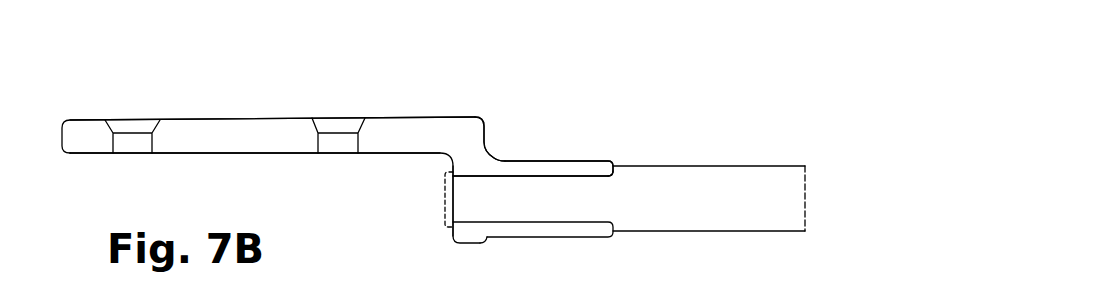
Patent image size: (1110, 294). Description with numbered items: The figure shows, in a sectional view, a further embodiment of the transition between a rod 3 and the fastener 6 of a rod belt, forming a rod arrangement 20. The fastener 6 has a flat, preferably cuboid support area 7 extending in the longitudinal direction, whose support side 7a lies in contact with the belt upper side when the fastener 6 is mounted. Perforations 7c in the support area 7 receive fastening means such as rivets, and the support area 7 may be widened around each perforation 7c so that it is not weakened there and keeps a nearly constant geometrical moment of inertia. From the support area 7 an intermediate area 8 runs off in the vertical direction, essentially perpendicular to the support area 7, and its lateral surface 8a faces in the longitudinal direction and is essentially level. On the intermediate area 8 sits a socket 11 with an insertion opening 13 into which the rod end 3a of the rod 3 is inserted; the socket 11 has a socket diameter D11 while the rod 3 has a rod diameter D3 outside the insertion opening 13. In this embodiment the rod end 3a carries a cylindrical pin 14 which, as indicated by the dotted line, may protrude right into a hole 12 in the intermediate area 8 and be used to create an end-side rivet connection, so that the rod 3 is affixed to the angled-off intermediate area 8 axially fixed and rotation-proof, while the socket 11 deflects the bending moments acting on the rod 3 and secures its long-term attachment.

The rod 3 is at (747, 180).
The rod end 3a is at (593, 186).
The fastener 6 is at (425, 116).
The support area 7 is at (190, 128).
The support side 7a is at (183, 156).
The perforation 7c is at (337, 134).
The intermediate area 8 is at (465, 232).
The lateral surface 8a is at (490, 127).
The socket 11 is at (568, 226).
The hole 12 is at (468, 177).
The insertion opening 13 is at (493, 207).
The cylindrical pin 14 is at (545, 190).
The rod arrangement 20 is at (704, 70).
The socket diameter D11 is at (507, 160).
The rod diameter D3 is at (506, 237).